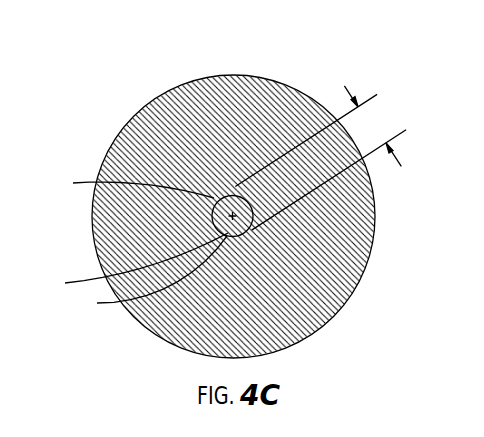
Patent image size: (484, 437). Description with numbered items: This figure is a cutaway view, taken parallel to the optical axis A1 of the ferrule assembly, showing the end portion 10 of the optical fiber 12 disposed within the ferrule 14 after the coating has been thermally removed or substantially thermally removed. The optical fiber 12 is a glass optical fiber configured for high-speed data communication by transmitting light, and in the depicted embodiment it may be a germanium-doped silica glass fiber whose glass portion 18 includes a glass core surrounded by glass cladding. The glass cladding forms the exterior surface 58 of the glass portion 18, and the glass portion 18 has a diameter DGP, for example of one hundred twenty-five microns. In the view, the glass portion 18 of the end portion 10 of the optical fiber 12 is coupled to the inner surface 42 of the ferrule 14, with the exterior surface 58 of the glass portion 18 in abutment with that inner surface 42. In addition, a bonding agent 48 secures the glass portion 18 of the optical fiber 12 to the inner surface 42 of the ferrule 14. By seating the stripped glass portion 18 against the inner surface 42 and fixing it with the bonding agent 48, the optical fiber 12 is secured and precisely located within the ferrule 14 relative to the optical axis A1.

The end portion 10 is at (233, 197).
The optical fiber 12 is at (212, 221).
The ferrule 14 is at (257, 113).
The glass portion 18 is at (238, 237).
The inner surface 42 is at (216, 197).
The bonding agent 48 is at (137, 265).
The exterior surface 58 is at (152, 276).
The optical axis A1 is at (135, 183).
The glass portion diameter DGP is at (320, 136).